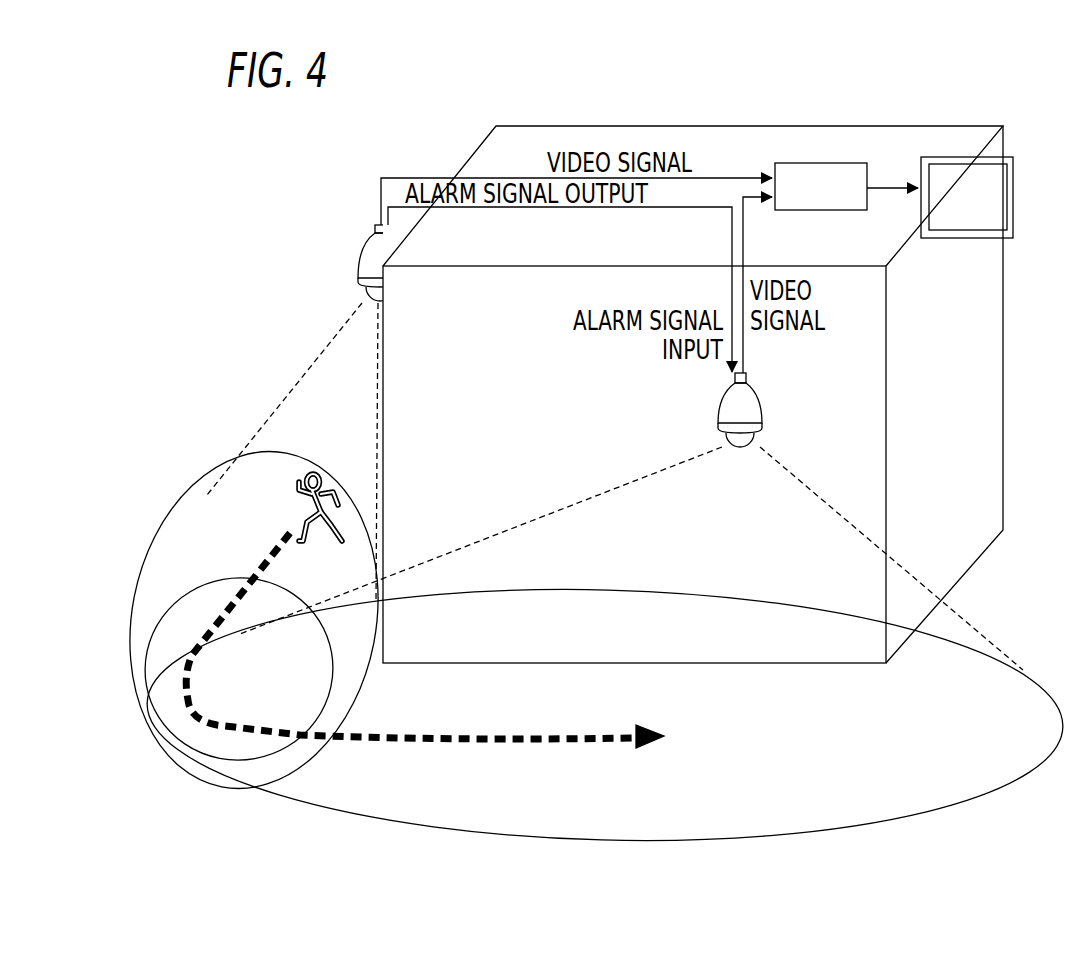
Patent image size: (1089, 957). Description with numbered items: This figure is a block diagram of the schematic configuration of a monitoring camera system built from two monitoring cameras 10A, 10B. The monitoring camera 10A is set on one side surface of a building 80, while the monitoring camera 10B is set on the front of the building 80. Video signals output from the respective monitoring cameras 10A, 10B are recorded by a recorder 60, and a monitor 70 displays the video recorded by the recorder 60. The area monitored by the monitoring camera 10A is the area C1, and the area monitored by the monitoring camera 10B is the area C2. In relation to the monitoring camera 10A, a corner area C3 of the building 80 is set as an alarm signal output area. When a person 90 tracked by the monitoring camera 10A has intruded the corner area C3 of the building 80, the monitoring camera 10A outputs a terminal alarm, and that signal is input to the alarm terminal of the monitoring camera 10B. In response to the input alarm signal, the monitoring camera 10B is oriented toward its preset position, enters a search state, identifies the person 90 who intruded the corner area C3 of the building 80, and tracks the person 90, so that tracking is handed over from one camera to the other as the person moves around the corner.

The monitoring camera 10A is at (360, 258).
The monitoring camera 10B is at (720, 412).
The recorder 60 is at (800, 163).
The monitor 70 is at (1013, 157).
The building 80 is at (1003, 375).
The person 90 is at (310, 473).
The area monitored by monitoring camera 10A C1 is at (160, 548).
The area monitored by monitoring camera 10B C2 is at (310, 813).
The corner area C3 is at (145, 668).